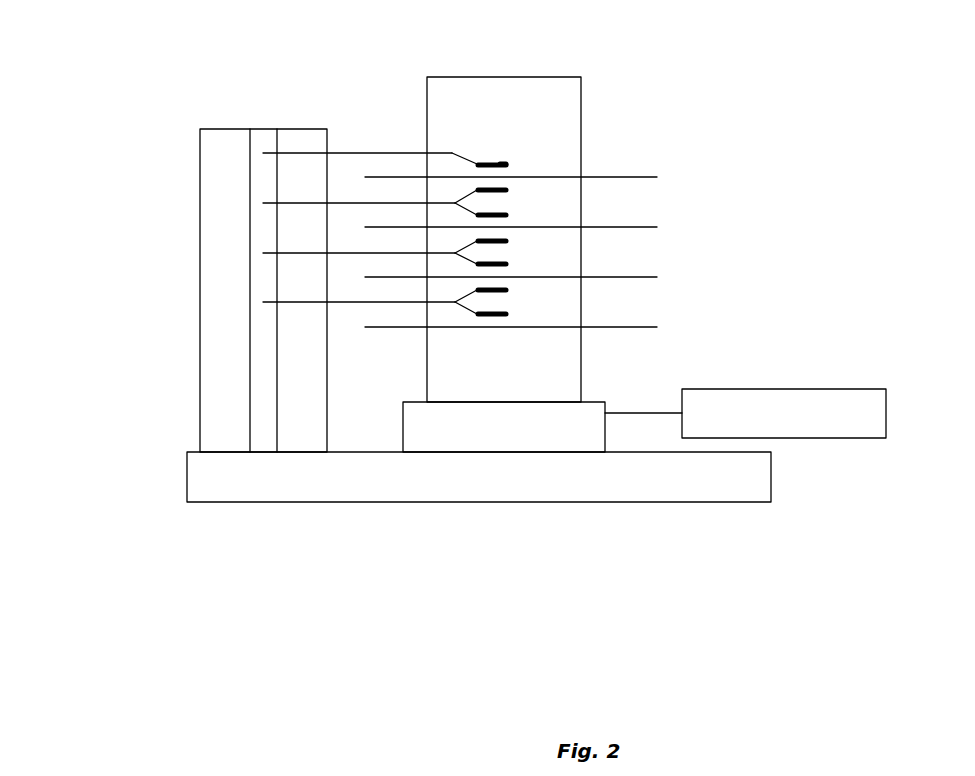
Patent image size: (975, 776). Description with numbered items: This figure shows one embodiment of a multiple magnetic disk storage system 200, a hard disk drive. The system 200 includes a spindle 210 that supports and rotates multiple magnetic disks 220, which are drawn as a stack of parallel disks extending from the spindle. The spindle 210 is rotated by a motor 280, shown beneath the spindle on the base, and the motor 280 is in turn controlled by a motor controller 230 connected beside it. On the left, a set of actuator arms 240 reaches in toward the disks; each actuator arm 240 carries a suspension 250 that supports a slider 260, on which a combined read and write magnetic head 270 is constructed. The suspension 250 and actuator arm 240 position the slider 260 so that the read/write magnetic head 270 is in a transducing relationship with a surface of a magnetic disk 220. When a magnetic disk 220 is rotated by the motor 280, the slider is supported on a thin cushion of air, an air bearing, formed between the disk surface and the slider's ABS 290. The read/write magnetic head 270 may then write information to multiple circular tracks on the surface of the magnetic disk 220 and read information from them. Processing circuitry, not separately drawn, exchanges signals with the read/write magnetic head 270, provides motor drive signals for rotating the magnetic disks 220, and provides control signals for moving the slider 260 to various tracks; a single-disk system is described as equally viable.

The multiple magnetic disk storage system 200 is at (450, 327).
The spindle 210 is at (568, 77).
The magnetic disk 220 is at (617, 176).
The motor controller 230 is at (813, 389).
The actuator arm 240 is at (378, 152).
The suspension 250 is at (467, 152).
The slider 260 is at (497, 162).
The read/write magnetic head 270 is at (505, 317).
The motor 280 is at (592, 402).
The ABS 290 is at (500, 161).